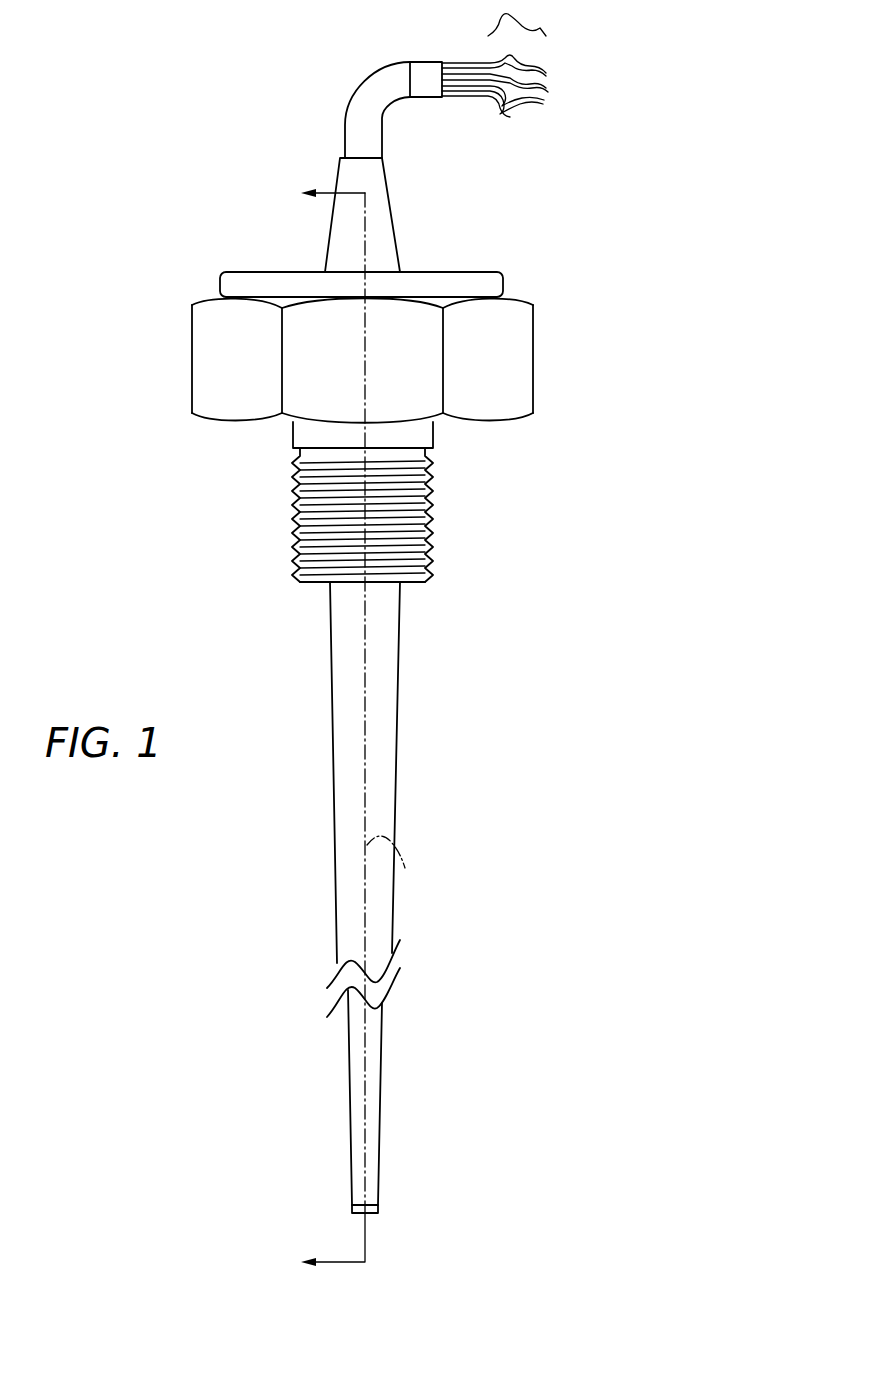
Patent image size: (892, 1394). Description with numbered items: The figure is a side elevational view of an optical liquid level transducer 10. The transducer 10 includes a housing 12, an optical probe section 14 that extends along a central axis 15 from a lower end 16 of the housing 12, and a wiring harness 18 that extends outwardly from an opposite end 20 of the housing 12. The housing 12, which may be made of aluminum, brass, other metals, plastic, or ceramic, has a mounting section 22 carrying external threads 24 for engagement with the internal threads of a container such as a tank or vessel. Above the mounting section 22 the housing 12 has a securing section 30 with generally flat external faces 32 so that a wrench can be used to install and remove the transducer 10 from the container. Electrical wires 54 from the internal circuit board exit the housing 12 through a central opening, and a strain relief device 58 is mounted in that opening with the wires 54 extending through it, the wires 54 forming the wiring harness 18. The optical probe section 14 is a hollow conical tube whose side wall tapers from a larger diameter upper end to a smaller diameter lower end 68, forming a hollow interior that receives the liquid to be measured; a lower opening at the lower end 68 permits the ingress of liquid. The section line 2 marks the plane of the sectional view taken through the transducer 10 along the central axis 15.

The section line 2- 2 is at (322, 728).
The optical liquid level transducer 10 is at (647, 211).
The housing 12 is at (545, 398).
The optical probe section 14 is at (412, 780).
The central axis 15 is at (405, 868).
The lower end 16 is at (416, 582).
The wiring harness 18 is at (378, 63).
The opposite end 20 is at (275, 272).
The mounting section 22 is at (433, 495).
The external threads 24 is at (295, 500).
The securing section 30 is at (533, 340).
The external faces 32 is at (315, 351).
The electrical wires 54 is at (513, 65).
The strain relief device 58 is at (378, 192).
The lower end 68 is at (402, 1101).